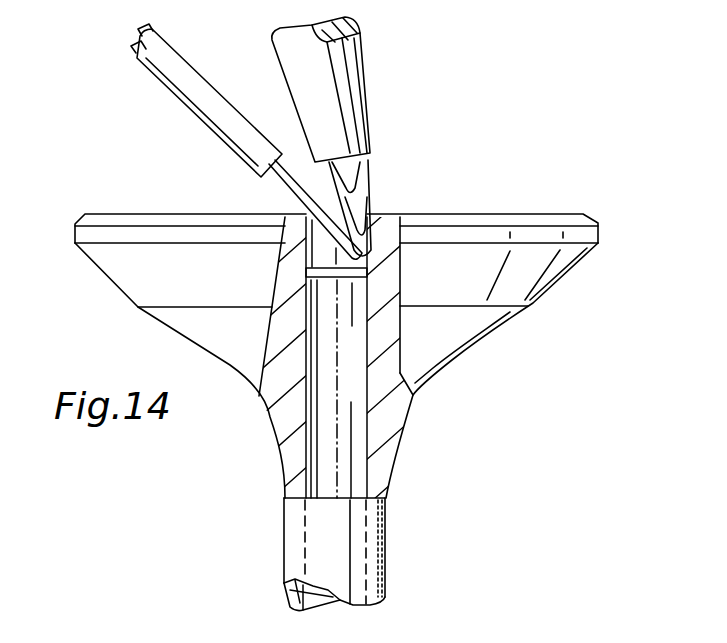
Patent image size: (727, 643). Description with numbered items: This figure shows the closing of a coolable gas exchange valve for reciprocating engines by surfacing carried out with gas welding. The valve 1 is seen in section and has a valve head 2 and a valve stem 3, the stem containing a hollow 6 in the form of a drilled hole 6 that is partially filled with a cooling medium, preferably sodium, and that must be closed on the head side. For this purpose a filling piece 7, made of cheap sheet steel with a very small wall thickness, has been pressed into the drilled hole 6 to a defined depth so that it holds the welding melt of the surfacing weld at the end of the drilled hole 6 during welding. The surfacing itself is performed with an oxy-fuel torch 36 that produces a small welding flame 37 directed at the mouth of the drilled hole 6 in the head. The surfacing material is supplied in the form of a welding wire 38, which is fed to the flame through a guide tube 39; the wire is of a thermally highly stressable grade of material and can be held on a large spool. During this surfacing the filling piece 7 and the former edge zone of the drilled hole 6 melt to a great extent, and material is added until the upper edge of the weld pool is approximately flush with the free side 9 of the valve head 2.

The tool body 1 is at (283, 524).
The valve head 2 is at (211, 294).
The valve stem 3 is at (358, 584).
The hollow (drilled hole) 6 is at (359, 400).
The filling piece 7 is at (336, 288).
The free side of the head 9 is at (481, 214).
The oxy-fuel torch 36 is at (358, 80).
The welding flame 37 is at (370, 186).
The welding wire 38 is at (293, 190).
The guide tube 39 is at (224, 117).